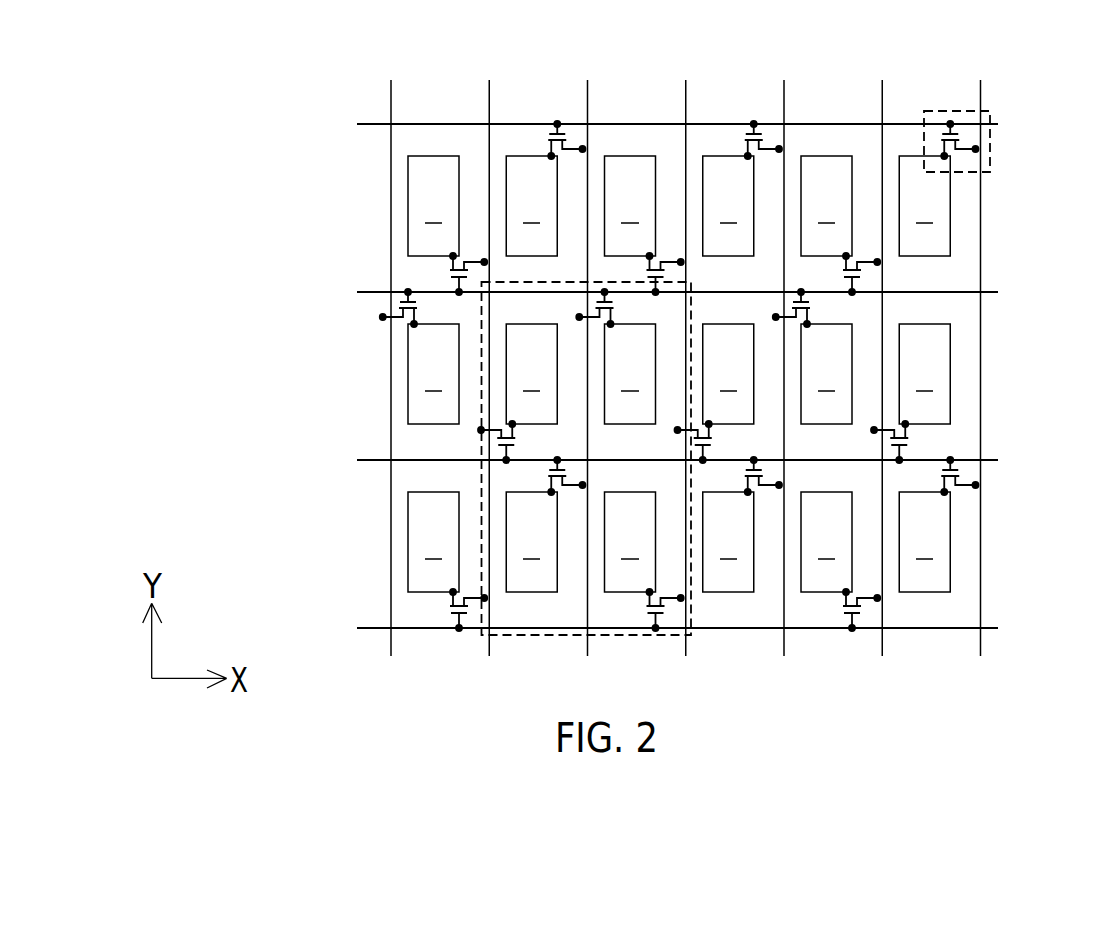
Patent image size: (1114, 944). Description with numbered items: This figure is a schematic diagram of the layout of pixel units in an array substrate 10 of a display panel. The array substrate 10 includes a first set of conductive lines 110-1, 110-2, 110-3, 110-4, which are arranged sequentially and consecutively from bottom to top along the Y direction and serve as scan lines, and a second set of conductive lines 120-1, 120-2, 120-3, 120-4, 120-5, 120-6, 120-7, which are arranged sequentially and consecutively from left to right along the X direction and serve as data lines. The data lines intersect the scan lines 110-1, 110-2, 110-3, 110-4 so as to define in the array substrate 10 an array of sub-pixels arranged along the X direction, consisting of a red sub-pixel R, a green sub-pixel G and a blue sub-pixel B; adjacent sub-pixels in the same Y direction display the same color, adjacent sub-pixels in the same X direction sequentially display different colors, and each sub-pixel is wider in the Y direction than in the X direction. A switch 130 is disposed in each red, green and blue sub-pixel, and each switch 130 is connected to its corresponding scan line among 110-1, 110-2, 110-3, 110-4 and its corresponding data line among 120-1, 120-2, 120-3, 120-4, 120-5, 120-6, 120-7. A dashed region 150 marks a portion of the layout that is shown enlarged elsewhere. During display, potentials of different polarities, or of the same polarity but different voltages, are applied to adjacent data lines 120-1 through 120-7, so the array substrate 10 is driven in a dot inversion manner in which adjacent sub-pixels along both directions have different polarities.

The array substrate 10 is at (212, 76).
The conductive line 110-1 is at (631, 626).
The conductive line 110-2 is at (631, 458).
The conductive line 110-3 is at (631, 290).
The conductive line 110-4 is at (631, 122).
The conductive line 120-1 is at (389, 346).
The conductive line 120-2 is at (489, 346).
The conductive line 120-3 is at (587, 346).
The conductive line 120-4 is at (686, 346).
The conductive line 120-5 is at (784, 346).
The conductive line 120-6 is at (882, 346).
The conductive line 120-7 is at (980, 346).
The switch 130 is at (991, 150).
The region 150 is at (460, 458).